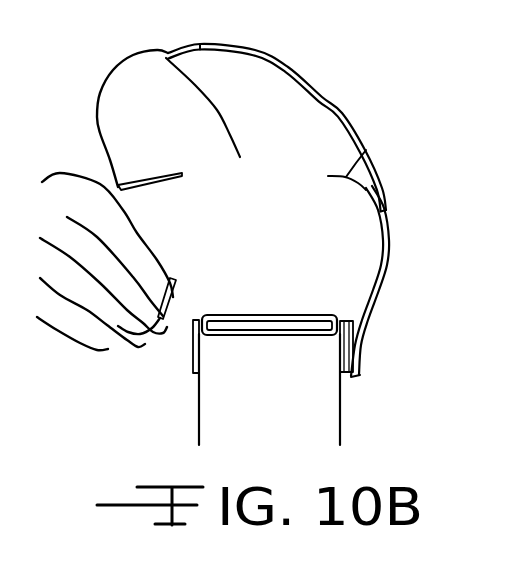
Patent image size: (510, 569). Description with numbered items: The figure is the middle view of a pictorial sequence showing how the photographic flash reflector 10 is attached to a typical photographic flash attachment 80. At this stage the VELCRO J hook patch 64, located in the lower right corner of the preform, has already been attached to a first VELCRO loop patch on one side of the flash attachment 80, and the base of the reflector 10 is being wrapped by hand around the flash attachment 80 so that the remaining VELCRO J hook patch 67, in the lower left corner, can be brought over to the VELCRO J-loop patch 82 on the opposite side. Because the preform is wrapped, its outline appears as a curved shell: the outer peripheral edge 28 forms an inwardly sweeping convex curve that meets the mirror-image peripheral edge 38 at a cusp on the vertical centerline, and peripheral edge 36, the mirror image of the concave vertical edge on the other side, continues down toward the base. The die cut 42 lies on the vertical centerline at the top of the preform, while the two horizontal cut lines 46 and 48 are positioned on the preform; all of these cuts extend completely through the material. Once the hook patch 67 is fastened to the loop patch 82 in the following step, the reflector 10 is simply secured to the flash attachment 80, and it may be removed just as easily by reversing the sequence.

The photographic flash reflector 10 is at (227, 201).
The outer peripheral edge 28 is at (95, 124).
The peripheral edge 36 is at (368, 287).
The peripheral edge 38 is at (344, 115).
The die cut 42 is at (217, 117).
The horizontal cut line 46 is at (143, 183).
The horizontal cut line 48 is at (369, 151).
The VELCRO J hook patch 64 is at (352, 373).
The VELCRO J hook patch 67 is at (175, 302).
The flash attachment 80 is at (277, 382).
The VELCRO J-loop patch 82 is at (193, 362).